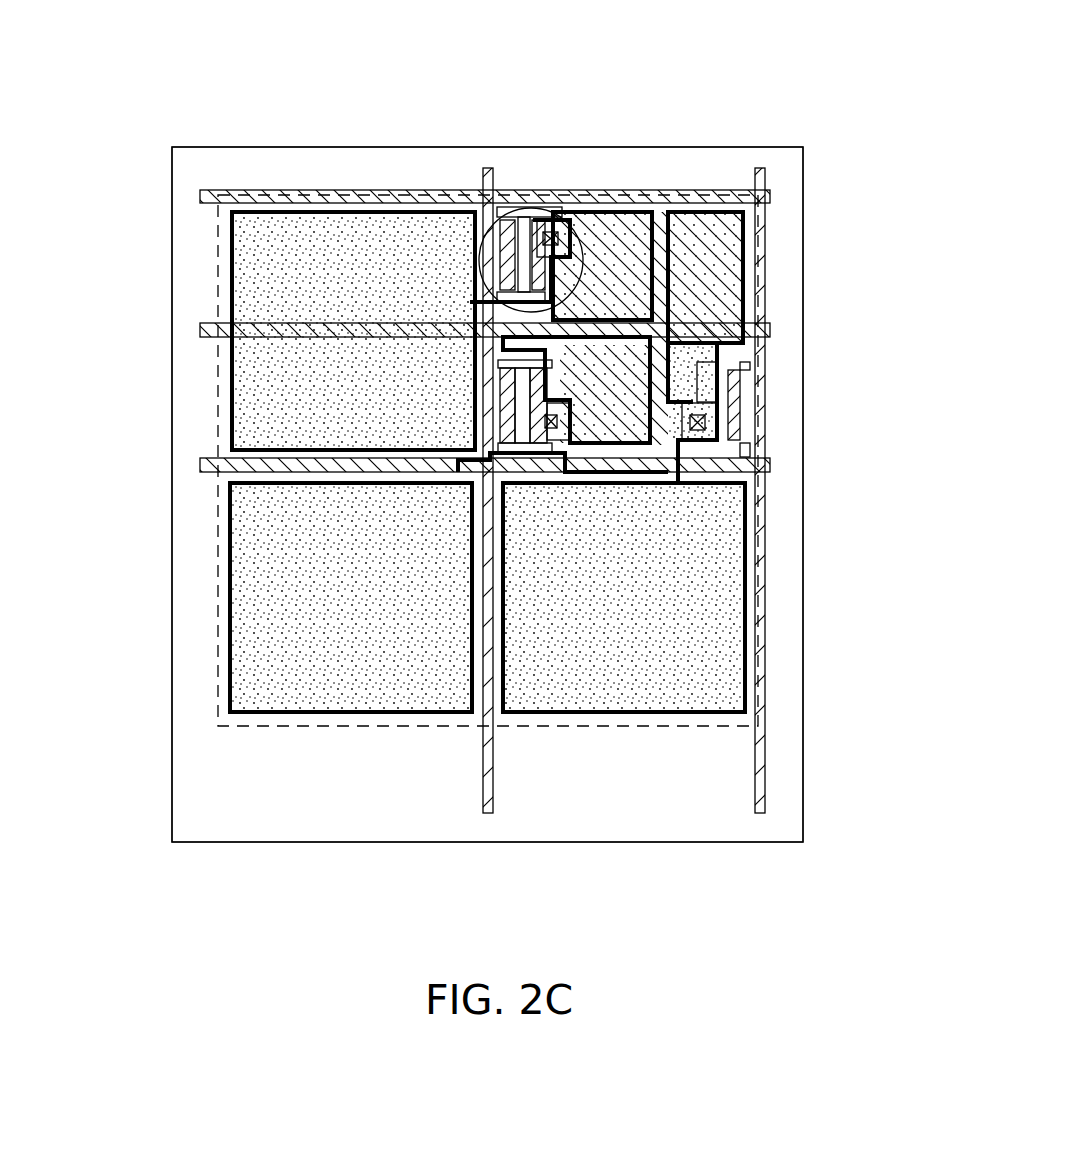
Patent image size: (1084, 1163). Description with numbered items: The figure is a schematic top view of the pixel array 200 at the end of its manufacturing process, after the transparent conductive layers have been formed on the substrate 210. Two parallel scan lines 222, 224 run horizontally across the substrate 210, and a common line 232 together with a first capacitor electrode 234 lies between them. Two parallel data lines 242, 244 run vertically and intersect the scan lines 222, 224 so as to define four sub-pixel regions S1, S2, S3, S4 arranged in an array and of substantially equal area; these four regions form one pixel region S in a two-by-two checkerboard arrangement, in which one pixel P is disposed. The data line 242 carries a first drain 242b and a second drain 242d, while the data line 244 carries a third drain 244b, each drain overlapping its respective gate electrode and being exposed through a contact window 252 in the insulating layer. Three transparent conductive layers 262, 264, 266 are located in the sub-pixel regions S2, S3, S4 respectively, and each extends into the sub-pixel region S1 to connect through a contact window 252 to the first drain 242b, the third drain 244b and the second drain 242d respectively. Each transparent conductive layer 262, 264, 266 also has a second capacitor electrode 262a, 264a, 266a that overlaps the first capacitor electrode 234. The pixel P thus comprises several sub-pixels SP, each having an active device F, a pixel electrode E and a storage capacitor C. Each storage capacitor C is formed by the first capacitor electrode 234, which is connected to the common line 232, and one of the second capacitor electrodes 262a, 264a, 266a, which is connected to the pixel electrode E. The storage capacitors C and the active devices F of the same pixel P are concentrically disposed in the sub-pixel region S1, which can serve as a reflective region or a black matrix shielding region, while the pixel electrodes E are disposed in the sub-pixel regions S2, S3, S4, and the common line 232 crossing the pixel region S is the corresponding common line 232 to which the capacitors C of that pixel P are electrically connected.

The pixel array 200 is at (168, 90).
The substrate 210 is at (180, 200).
The scan line 222 is at (291, 192).
The common line 232 is at (250, 325).
The scan line 224 is at (768, 462).
The first capacitor electrode 234 is at (692, 222).
The data line 242 is at (488, 175).
The first drain 242b is at (548, 225).
The second drain 242d is at (533, 450).
The data line 244 is at (768, 185).
The third drain 244b is at (700, 468).
The contact window 252 is at (554, 228).
The transparent conductive layer 262 is at (312, 230).
The second capacitor electrode 262a is at (658, 270).
The transparent conductive layer 264 is at (720, 552).
The second capacitor electrode 264a is at (728, 283).
The transparent conductive layer 266 is at (322, 692).
The second capacitor electrode 266a is at (630, 345).
The pixel electrode E is at (245, 255).
The storage capacitor C is at (752, 222).
The active device F is at (578, 245).
The pixel P is at (778, 738).
The pixel region S is at (205, 205).
The sub-pixel region S1 is at (772, 173).
The sub-pixel region S2 is at (415, 195).
The sub-pixel region S3 is at (762, 655).
The sub-pixel region S4 is at (360, 730).
The sub-pixel SP is at (440, 208).